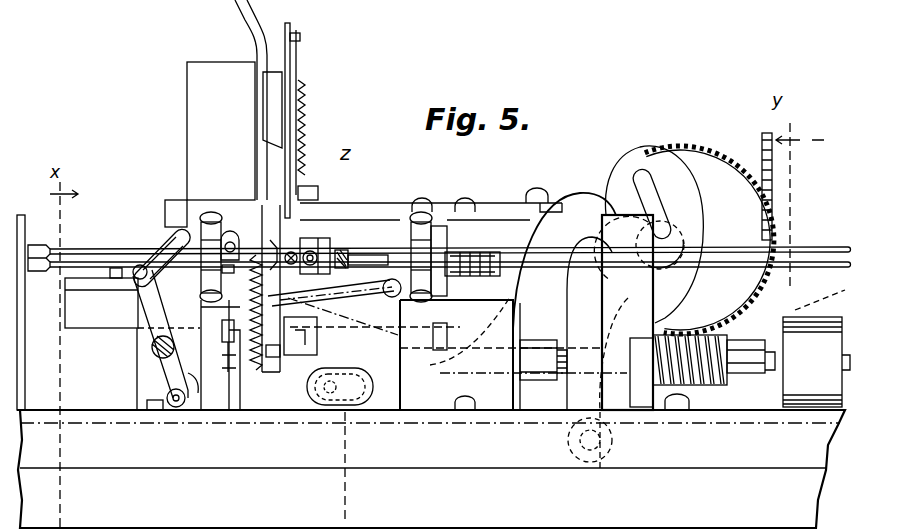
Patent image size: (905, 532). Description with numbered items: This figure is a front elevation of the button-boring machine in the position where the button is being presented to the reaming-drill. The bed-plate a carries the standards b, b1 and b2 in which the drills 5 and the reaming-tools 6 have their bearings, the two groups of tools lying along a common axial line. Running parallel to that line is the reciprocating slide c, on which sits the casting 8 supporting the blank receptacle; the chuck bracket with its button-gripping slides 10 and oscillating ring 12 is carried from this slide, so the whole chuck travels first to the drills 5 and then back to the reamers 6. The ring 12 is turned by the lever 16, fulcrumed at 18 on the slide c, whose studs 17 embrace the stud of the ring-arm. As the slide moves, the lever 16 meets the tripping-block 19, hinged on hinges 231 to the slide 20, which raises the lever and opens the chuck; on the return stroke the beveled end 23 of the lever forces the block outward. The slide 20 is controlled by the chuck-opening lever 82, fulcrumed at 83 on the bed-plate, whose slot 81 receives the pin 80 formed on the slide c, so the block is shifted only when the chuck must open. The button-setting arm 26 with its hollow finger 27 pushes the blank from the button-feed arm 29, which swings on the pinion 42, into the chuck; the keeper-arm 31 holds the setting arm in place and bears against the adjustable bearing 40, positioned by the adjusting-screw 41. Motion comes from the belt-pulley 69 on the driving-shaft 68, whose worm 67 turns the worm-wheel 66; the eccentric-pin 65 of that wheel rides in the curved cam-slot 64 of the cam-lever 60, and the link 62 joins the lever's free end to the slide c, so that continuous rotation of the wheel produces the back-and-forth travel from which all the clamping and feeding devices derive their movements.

The drills 5 is at (381, 222).
The reaming-tools 6 is at (104, 252).
The casting 8 is at (227, 100).
The button-gripping slides 10 is at (270, 250).
The oscillating ring 12 is at (252, 221).
The lever 16 is at (333, 307).
The studs 17 is at (230, 241).
The fulcrum 18 is at (391, 298).
The tripping-block 19 is at (250, 312).
The slide 20 is at (325, 386).
The beveled end 23 is at (222, 330).
The button-setting arm 26 is at (315, 247).
The hollow finger 27 is at (292, 266).
The button-feed arm 29 is at (292, 57).
The keeper-arm 31 is at (344, 262).
The adjustable bearing 40 is at (352, 272).
The adjusting-screw 41 is at (455, 278).
The pinion 42 is at (284, 204).
The cam-lever 60 is at (654, 234).
The arm or link 62 is at (570, 331).
The cam-slot 64 is at (655, 195).
The eccentric-pin 65 is at (668, 240).
The worm-wheel 66 is at (709, 240).
The coöperating worm-wheel 67 is at (722, 385).
The driving-shaft 68 is at (773, 372).
The belt-pulley 69 is at (816, 348).
The pin or projection 80 is at (134, 276).
The slot 81 is at (162, 242).
The chuck-opening lever 82 is at (150, 312).
The fulcrum 83 is at (156, 352).
The hinges 231 is at (300, 360).
The bed-plate a is at (431, 469).
The standard b is at (623, 312).
The standard b1 is at (456, 355).
The standard b2 is at (188, 355).
The reciprocating slide c is at (132, 298).